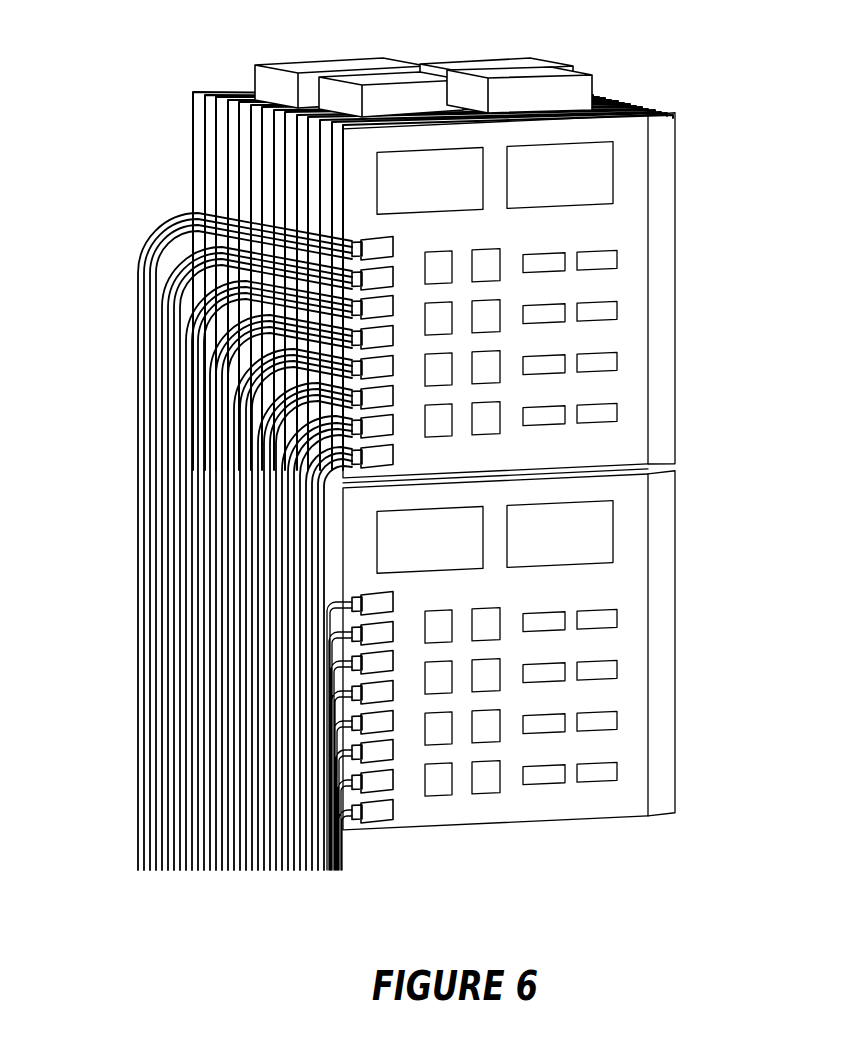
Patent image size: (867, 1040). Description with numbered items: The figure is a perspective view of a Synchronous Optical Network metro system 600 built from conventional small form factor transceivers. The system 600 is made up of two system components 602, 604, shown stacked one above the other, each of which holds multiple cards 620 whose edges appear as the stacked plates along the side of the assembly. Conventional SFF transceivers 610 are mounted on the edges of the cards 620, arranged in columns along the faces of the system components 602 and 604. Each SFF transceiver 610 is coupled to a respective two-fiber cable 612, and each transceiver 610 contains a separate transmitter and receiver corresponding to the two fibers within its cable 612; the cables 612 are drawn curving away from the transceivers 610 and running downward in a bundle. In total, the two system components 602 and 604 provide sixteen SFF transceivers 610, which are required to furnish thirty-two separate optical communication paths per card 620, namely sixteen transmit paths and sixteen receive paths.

The SONET metro system 600 is at (415, 474).
The system component 602 is at (668, 198).
The system component 604 is at (672, 582).
The SFF transceiver 610 is at (393, 780).
The two-fiber cable 612 is at (165, 260).
The card 620 is at (212, 165).